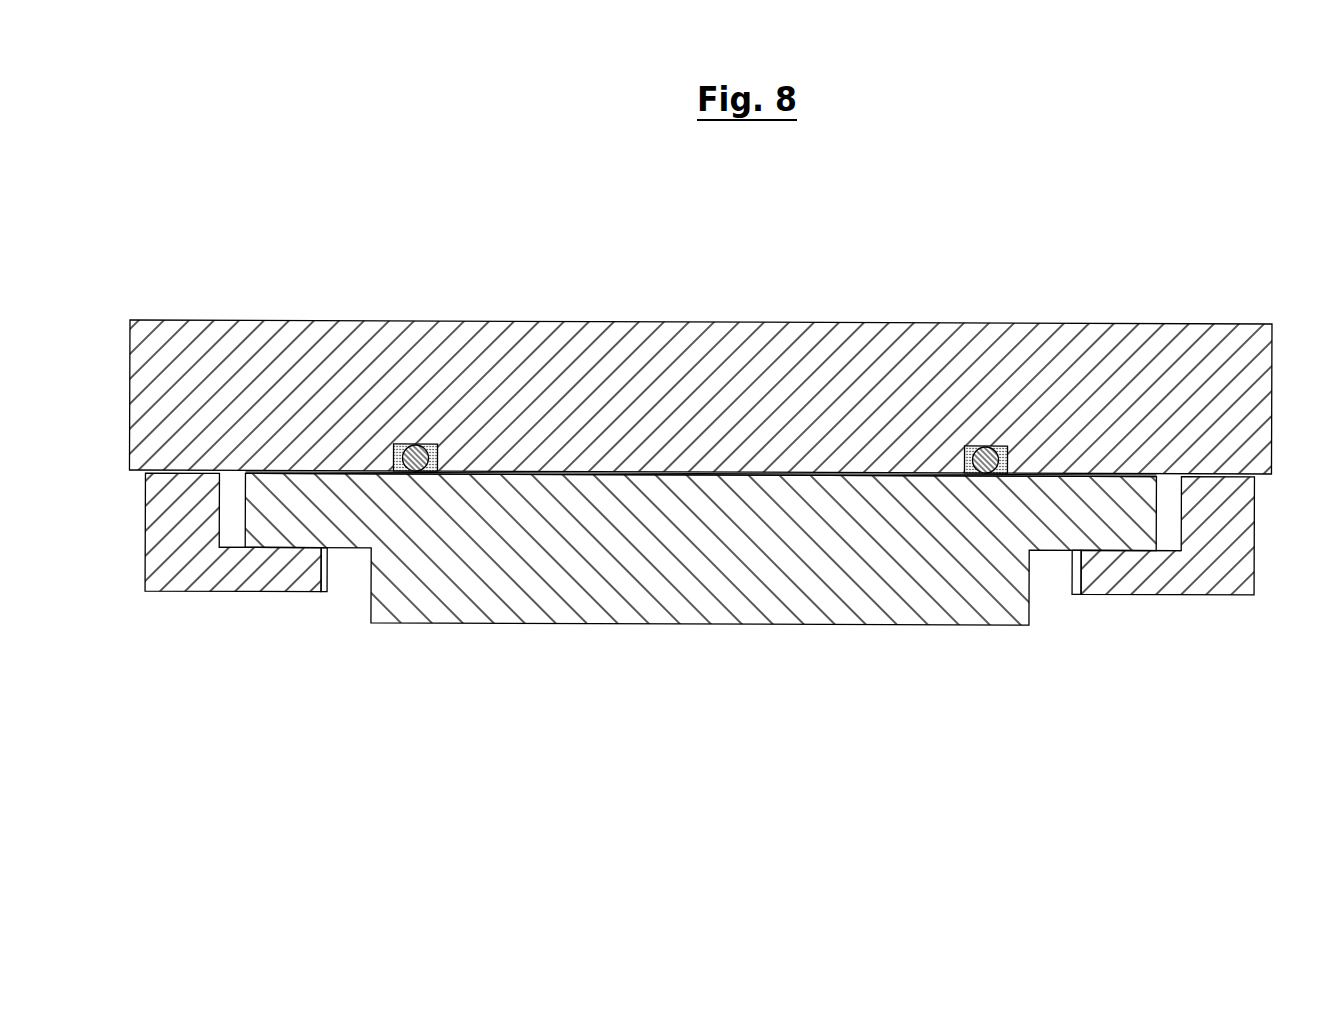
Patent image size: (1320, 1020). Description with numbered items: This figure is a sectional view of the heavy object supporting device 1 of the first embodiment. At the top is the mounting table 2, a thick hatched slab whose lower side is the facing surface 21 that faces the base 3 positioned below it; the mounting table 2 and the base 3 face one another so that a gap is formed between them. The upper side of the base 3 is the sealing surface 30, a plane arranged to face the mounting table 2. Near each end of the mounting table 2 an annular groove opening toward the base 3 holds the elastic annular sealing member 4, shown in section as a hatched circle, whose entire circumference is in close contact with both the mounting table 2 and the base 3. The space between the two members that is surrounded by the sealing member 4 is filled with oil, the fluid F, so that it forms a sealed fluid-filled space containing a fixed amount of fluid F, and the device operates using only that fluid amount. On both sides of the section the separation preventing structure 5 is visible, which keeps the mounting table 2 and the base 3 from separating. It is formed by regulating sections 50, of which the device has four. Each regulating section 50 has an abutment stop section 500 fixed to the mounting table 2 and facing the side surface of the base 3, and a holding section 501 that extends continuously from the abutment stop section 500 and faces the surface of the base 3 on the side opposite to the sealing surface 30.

The heavy object supporting device 1 is at (1173, 254).
The mounting table 2 is at (700, 314).
The base 3 is at (668, 630).
The elastic annular sealing member 4 is at (400, 446).
The facing surface 21 is at (741, 476).
The sealing surface 30 is at (848, 468).
The fluid F is at (965, 443).
The separation preventing structure 5 is at (698, 623).
The regulating section 50 is at (123, 722).
The abutment stop section 500 is at (146, 533).
The holding section 501 is at (248, 577).